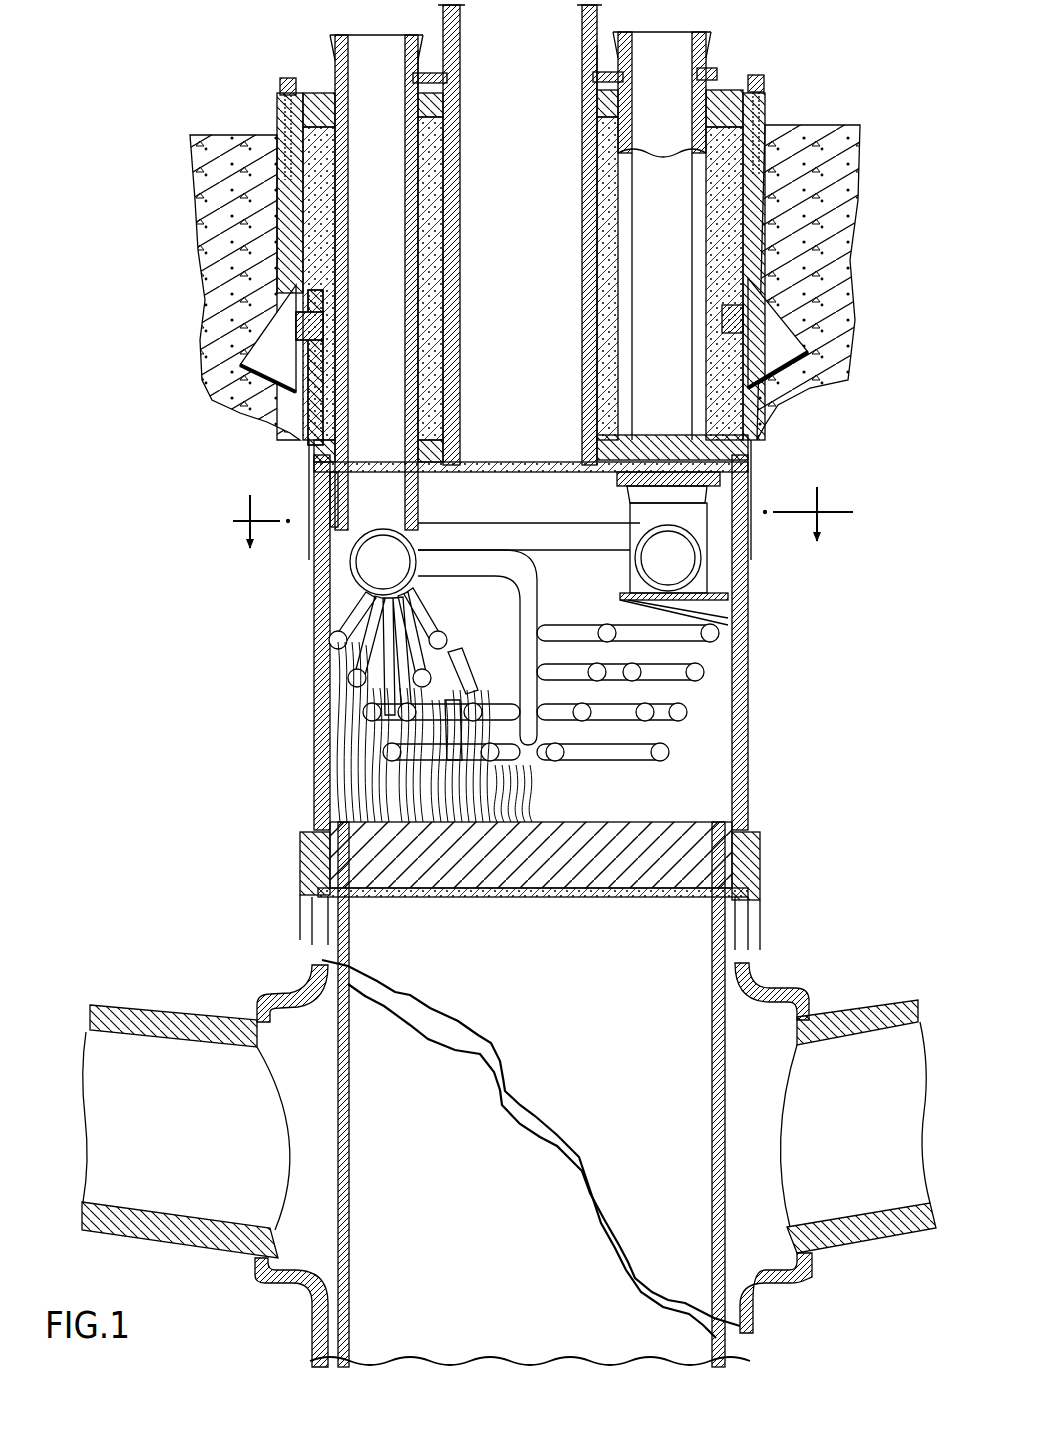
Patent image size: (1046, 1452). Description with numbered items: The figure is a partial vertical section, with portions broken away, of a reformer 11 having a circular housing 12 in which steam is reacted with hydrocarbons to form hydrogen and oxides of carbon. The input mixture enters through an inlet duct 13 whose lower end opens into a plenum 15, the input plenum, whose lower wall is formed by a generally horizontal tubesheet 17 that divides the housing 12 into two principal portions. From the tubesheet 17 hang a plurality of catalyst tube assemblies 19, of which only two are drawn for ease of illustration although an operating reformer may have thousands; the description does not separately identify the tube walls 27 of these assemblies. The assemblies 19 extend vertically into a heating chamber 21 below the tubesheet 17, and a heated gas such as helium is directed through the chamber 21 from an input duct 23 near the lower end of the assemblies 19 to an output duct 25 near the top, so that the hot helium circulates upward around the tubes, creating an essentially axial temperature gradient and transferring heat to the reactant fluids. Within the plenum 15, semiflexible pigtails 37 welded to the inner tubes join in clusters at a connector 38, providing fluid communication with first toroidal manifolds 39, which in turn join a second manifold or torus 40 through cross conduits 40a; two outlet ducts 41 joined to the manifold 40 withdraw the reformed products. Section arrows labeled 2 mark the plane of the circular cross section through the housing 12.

The reformer 11 is at (165, 148).
The housing 12 is at (285, 848).
The inlet duct 13 is at (555, 55).
The plenum 15 is at (700, 772).
The tubesheet 17 is at (695, 850).
The catalyst tube assemblies 19 is at (353, 920).
The heating chamber 21 is at (738, 1015).
The input duct 23 is at (150, 1005).
The output duct 25 is at (890, 1005).
The tube wall 27 is at (352, 942).
The semiflexible pigtails 37 is at (345, 740).
The connector 38 is at (363, 686).
The first toroidal manifolds 39 is at (455, 550).
The second manifold 40 is at (630, 556).
The cross conduits 40a is at (425, 605).
The outlet ducts 41 is at (365, 48).
The section line 2- 2 is at (543, 537).